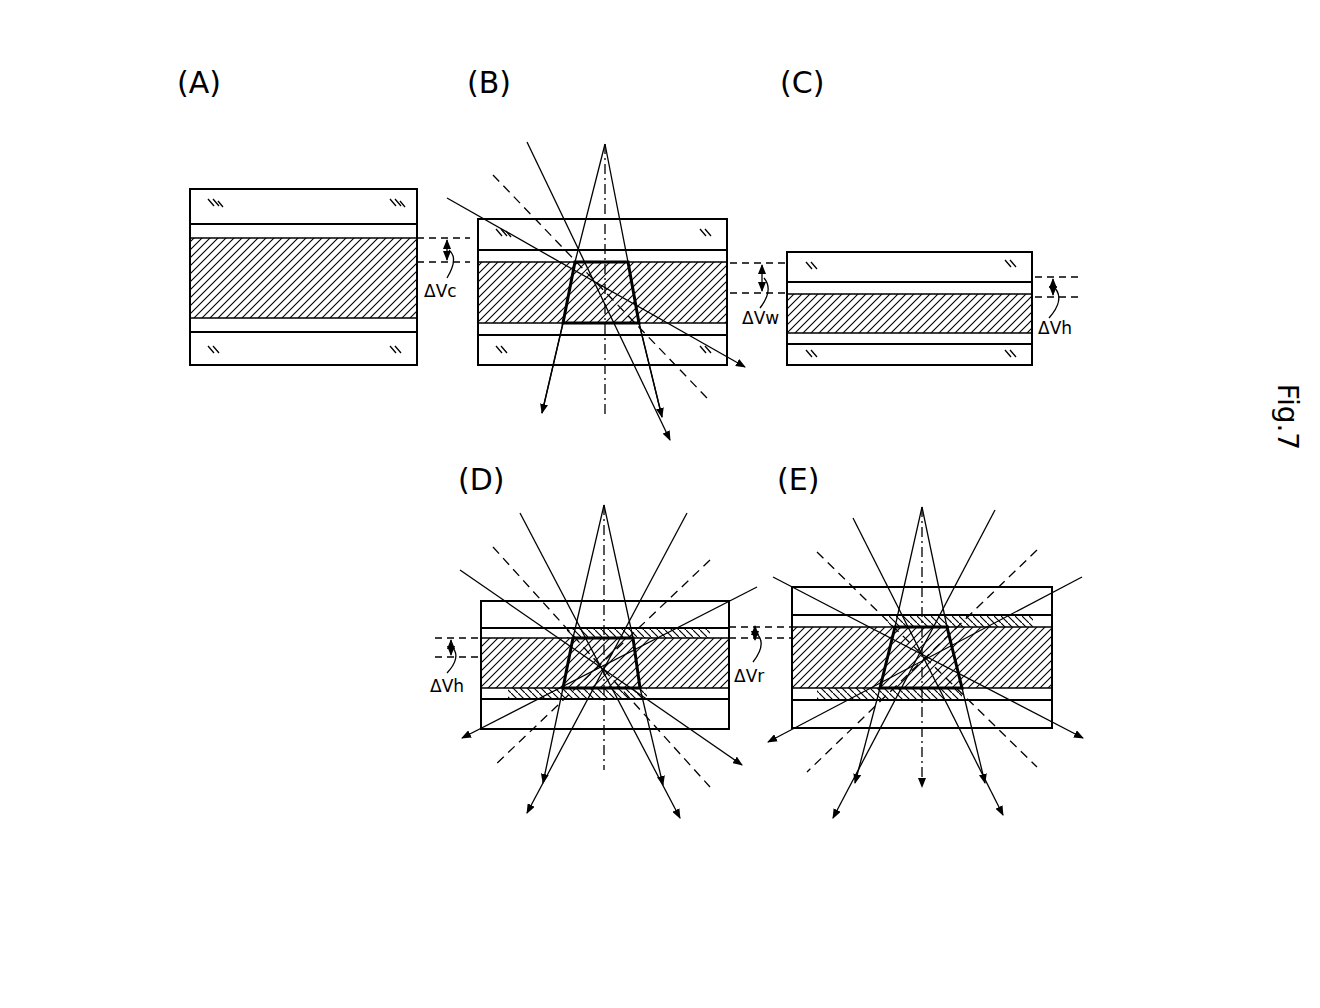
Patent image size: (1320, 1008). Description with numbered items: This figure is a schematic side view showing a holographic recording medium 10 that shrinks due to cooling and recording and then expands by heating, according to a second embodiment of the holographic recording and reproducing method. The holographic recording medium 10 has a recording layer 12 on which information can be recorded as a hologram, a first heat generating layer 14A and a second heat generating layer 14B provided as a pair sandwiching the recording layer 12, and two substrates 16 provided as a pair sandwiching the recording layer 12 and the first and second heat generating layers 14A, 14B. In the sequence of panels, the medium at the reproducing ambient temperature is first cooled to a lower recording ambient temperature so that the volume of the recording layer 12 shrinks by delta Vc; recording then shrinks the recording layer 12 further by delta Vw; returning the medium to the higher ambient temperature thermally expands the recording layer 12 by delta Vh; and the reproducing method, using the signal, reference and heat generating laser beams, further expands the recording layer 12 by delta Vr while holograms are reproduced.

The holographic recording medium 10 is at (345, 173).
The recording layer 12 is at (198, 277).
The first heat generating layer 14A is at (190, 234).
The second heat generating layer 14B is at (190, 324).
The substrates 16 is at (190, 203).